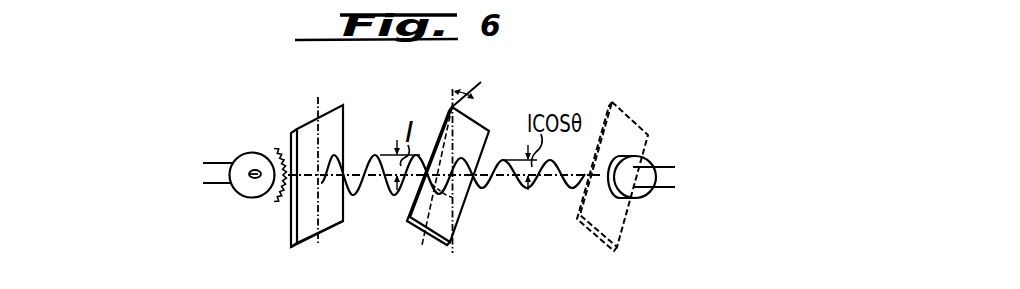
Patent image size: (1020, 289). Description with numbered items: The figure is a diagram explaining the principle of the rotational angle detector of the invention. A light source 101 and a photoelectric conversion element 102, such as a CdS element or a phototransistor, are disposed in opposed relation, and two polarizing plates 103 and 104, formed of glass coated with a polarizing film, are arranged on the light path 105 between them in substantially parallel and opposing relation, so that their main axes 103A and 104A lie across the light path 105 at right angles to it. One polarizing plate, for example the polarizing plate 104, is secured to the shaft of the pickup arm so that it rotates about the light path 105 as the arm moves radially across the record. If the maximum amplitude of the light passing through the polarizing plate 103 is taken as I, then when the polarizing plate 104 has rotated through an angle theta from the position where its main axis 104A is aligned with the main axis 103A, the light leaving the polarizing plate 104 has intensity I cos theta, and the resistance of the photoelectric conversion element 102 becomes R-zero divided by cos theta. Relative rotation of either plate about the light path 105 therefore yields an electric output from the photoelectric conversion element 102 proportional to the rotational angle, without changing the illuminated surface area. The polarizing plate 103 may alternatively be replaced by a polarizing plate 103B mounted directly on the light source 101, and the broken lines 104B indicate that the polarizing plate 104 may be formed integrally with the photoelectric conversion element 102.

The light source 101 is at (250, 152).
The photoelectric conversion element 102 is at (644, 142).
The polarizing plate 103 is at (308, 238).
The main axis of polarizing plate 103 103A is at (318, 101).
The polarizing plate mounted on the light source 103B is at (283, 197).
The polarizing plate 104 is at (422, 228).
The main axis of polarizing plate 104 104A is at (478, 101).
The broken lines indicating integral polarizing plate 104B is at (621, 100).
The light path 105 is at (573, 173).